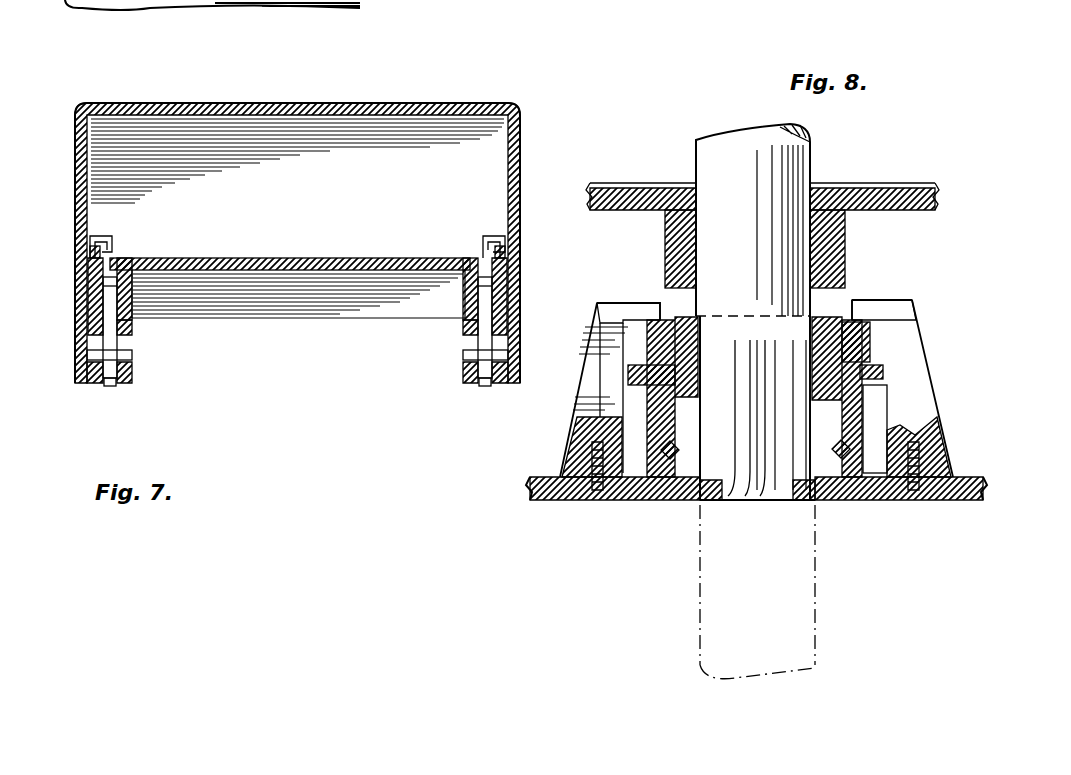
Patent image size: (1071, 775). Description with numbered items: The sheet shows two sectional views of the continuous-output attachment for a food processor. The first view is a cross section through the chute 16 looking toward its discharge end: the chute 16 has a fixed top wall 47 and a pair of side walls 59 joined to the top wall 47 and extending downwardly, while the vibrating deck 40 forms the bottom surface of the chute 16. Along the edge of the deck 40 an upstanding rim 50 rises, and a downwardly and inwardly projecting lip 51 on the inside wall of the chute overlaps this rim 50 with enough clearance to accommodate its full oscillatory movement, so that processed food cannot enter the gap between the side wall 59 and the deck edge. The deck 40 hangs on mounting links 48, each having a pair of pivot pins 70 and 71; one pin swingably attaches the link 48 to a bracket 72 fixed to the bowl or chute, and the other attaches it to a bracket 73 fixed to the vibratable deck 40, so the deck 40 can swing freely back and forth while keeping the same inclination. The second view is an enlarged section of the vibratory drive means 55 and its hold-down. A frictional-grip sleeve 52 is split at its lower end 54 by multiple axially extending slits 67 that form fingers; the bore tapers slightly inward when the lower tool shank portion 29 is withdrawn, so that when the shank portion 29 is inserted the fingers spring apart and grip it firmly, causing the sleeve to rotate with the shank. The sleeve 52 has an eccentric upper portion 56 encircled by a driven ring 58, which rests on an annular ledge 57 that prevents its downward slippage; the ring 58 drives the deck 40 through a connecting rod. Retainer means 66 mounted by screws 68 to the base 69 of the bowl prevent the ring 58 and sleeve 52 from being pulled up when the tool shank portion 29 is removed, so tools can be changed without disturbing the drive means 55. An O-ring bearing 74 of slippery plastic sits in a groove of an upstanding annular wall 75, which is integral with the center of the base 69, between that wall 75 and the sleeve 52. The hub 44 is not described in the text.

In FIG. 7, the chute 16 is at (531, 126).
In FIG. 8, the lower portion of the shank 29 is at (806, 142).
In FIG. 7, the vibrating deck 40 is at (345, 258).
In FIG. 8, the vibrating deck 40 is at (900, 198).
In FIG. 8, the hub flange 44 is at (815, 186).
In FIG. 7, the fixed top wall 47 is at (313, 103).
In FIG. 7, the mounting links 48 is at (113, 384).
In FIG. 7, the upstanding rim 50 is at (92, 251).
In FIG. 7, the lip 51 is at (108, 236).
In FIG. 8, the frictional-grip sleeve 52 is at (628, 400).
In FIG. 8, the lower end of the sleeve 54 is at (692, 503).
In FIG. 8, the vibratory drive means 55 is at (916, 248).
In FIG. 8, the eccentric upper portion 56 is at (830, 312).
In FIG. 8, the annular ledge 57 is at (883, 377).
In FIG. 8, the driven ring 58 is at (858, 340).
In FIG. 7, the side walls 59 is at (80, 290).
In FIG. 8, the retainer means 66 is at (627, 300).
In FIG. 8, the axially extending slits 67 is at (766, 498).
In FIG. 8, the screws 68 is at (600, 503).
In FIG. 8, the base of the bowl 69 is at (558, 503).
In FIG. 7, the pivot pin 70 is at (118, 300).
In FIG. 7, the pivot pin 71 is at (128, 357).
In FIG. 7, the bracket 72 is at (127, 378).
In FIG. 7, the bracket 73 is at (135, 283).
In FIG. 8, the O-ring bearing 74 is at (832, 503).
In FIG. 8, the upstanding annular wall 75 is at (865, 412).